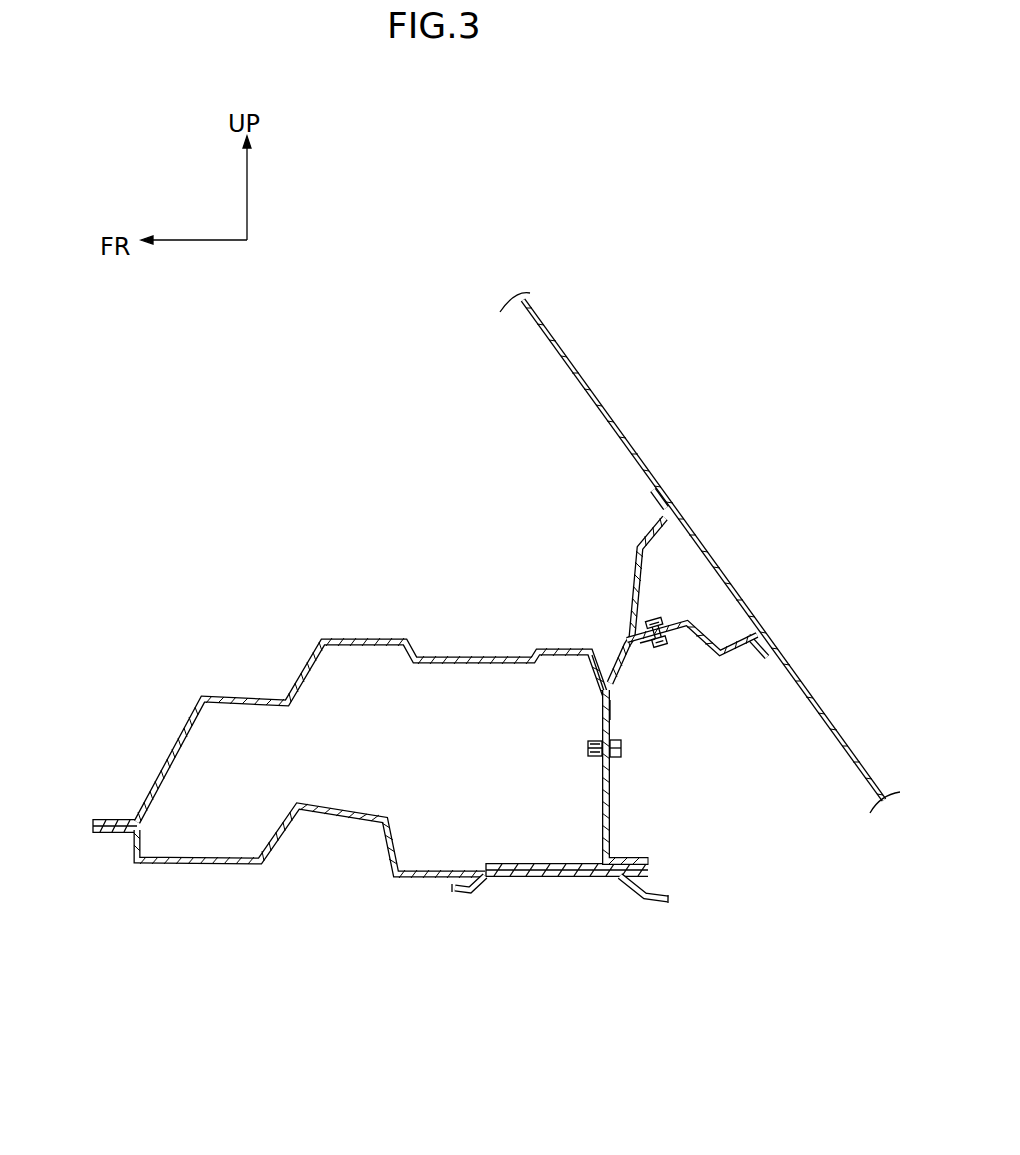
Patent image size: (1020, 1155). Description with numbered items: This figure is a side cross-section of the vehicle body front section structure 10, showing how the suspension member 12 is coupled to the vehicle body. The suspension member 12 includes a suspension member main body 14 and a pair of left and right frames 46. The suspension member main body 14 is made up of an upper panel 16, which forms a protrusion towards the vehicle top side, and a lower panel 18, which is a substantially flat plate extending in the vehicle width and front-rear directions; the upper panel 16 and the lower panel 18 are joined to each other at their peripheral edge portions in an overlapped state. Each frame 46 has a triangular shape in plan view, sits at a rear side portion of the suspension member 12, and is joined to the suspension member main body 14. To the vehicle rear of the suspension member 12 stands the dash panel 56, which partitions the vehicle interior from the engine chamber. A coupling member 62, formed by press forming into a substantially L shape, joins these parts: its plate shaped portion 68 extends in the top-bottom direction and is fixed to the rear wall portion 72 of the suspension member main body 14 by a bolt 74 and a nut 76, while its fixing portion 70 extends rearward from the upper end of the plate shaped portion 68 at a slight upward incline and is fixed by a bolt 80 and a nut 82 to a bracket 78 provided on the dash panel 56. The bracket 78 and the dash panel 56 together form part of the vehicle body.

The vehicle front structure 10 is at (517, 245).
The suspension member 12 is at (380, 620).
The suspension member main body 14 is at (62, 703).
The upper panel 16 is at (173, 753).
The lower panel 18 is at (153, 862).
The frame 46 is at (555, 877).
The dash panel 56 is at (727, 568).
The coupling member 62 is at (617, 655).
The plate shaped portion 68 is at (613, 710).
The fixing portion 70 is at (647, 650).
The rear wall portion 72 is at (612, 808).
The bolt 74 is at (621, 748).
The nut 76 is at (593, 760).
The bracket 78 is at (630, 578).
The bolt 80 is at (680, 650).
The nut 82 is at (667, 620).